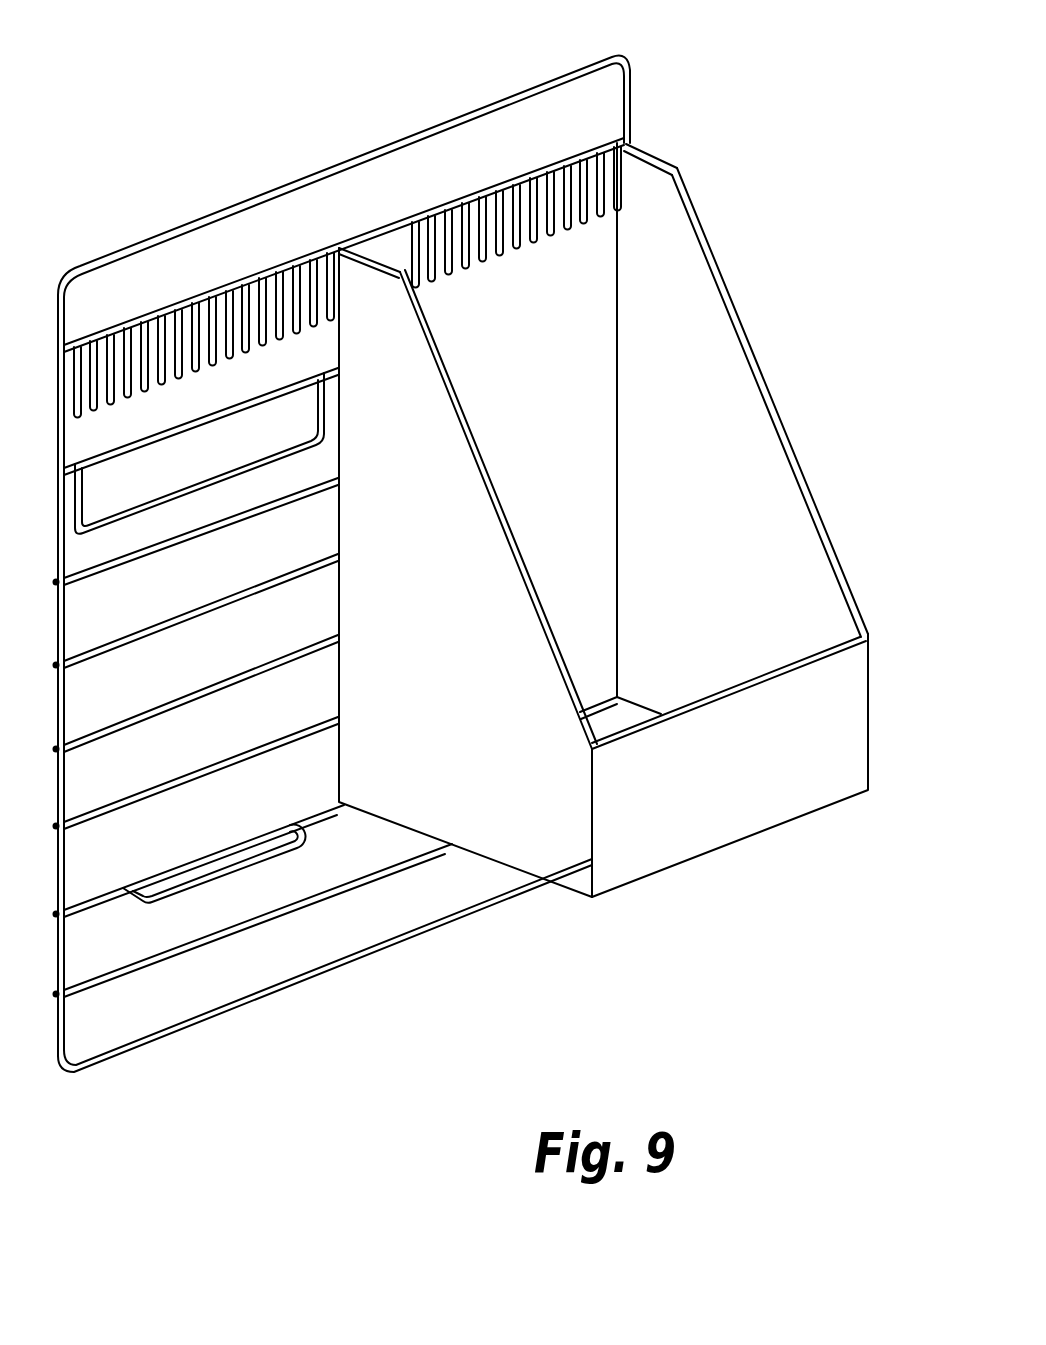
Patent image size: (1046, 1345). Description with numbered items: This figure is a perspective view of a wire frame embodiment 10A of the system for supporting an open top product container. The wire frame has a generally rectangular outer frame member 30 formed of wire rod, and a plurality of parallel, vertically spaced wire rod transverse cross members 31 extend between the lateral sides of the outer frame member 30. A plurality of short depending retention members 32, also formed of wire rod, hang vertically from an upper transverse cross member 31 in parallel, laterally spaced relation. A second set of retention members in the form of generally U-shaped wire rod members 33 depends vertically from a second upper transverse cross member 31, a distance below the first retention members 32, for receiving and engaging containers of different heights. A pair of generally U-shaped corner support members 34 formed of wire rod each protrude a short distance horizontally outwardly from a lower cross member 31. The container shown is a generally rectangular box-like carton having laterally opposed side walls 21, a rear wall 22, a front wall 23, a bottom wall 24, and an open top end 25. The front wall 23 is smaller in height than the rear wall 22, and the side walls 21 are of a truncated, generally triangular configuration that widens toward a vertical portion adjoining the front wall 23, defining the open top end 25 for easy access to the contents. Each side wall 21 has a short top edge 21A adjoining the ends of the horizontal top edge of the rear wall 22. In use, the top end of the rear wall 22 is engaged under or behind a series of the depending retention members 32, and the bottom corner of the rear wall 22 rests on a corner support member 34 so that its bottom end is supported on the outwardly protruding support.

The wire frame embodiment 10A is at (697, 65).
The side walls 21 is at (420, 563).
The short top edge 21A is at (378, 275).
The rear wall 22 is at (548, 438).
The front wall 23 is at (730, 788).
The bottom wall 24 is at (628, 710).
The open top end 25 is at (663, 213).
The outer frame member 30 is at (264, 196).
The transverse cross members 31 is at (204, 418).
The retention members 32 is at (445, 284).
The U-shaped wire rod members 33 is at (234, 470).
The corner support members 34 is at (378, 821).